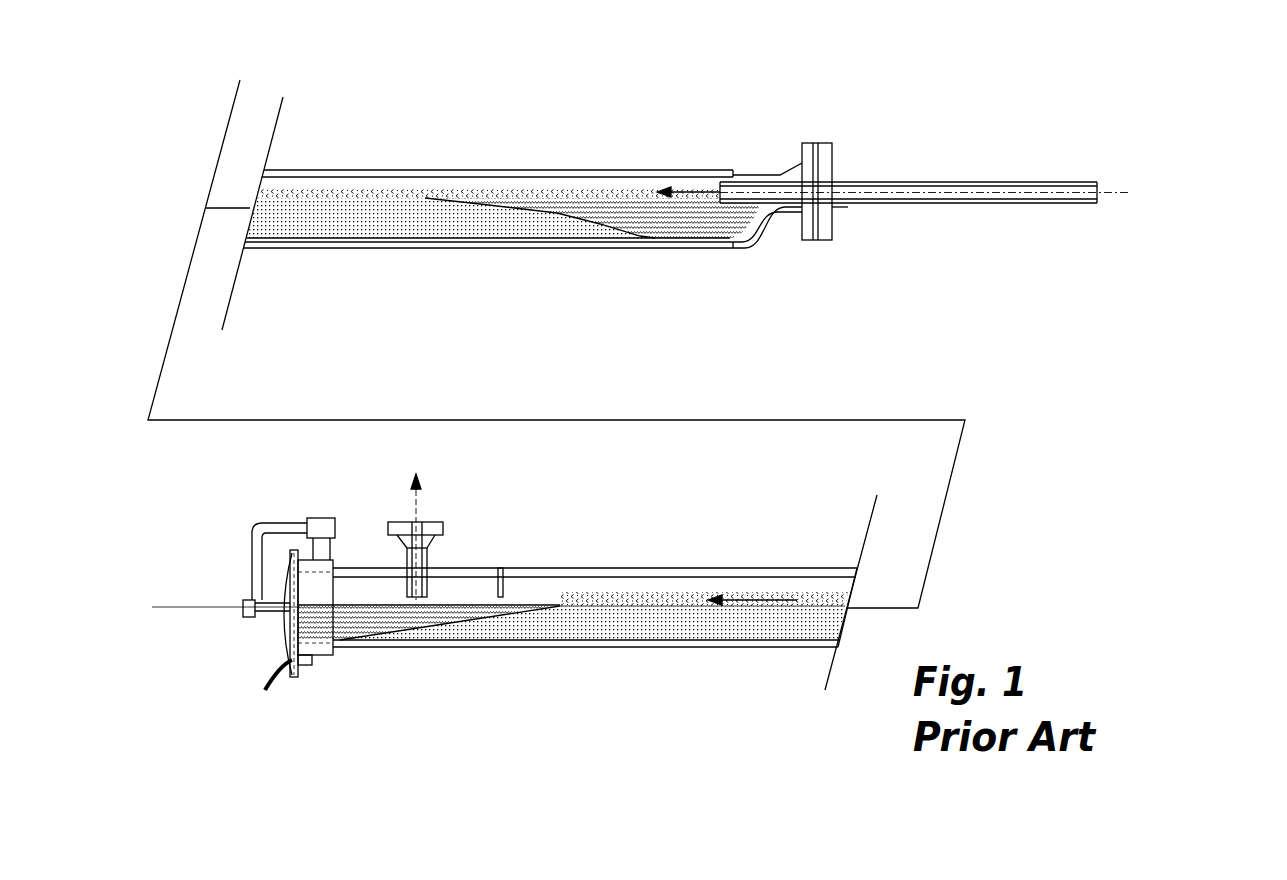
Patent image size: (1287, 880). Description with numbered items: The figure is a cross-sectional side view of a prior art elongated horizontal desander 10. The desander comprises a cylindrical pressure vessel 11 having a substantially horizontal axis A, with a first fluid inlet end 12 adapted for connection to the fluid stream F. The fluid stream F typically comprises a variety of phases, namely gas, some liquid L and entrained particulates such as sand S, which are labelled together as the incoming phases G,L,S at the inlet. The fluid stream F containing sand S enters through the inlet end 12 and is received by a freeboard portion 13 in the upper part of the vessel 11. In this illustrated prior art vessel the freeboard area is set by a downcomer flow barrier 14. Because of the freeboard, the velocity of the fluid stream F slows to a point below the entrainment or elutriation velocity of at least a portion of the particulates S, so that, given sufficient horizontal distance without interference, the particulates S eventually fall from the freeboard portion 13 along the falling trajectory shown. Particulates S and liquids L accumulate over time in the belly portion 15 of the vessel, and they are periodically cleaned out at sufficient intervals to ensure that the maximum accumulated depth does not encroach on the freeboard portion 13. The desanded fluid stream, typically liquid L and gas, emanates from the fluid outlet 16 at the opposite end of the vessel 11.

The prior art slurry dewatering apparatus 10 is at (700, 118).
The cylindrical pressure vessel 11 is at (400, 168).
The first fluid inlet end 12 is at (787, 168).
The freeboard portion 13 is at (270, 190).
The downcomer flow barrier 14 is at (504, 588).
The belly portion 15 is at (260, 225).
The fluid outlet 16 is at (393, 527).
The horizontal axis A is at (240, 80).
The sand S is at (353, 217).
The liquid L is at (713, 227).
The fluid stream F is at (1112, 193).
The gas, liquid and sand phases of the fluid stream G,L,S is at (1120, 192).